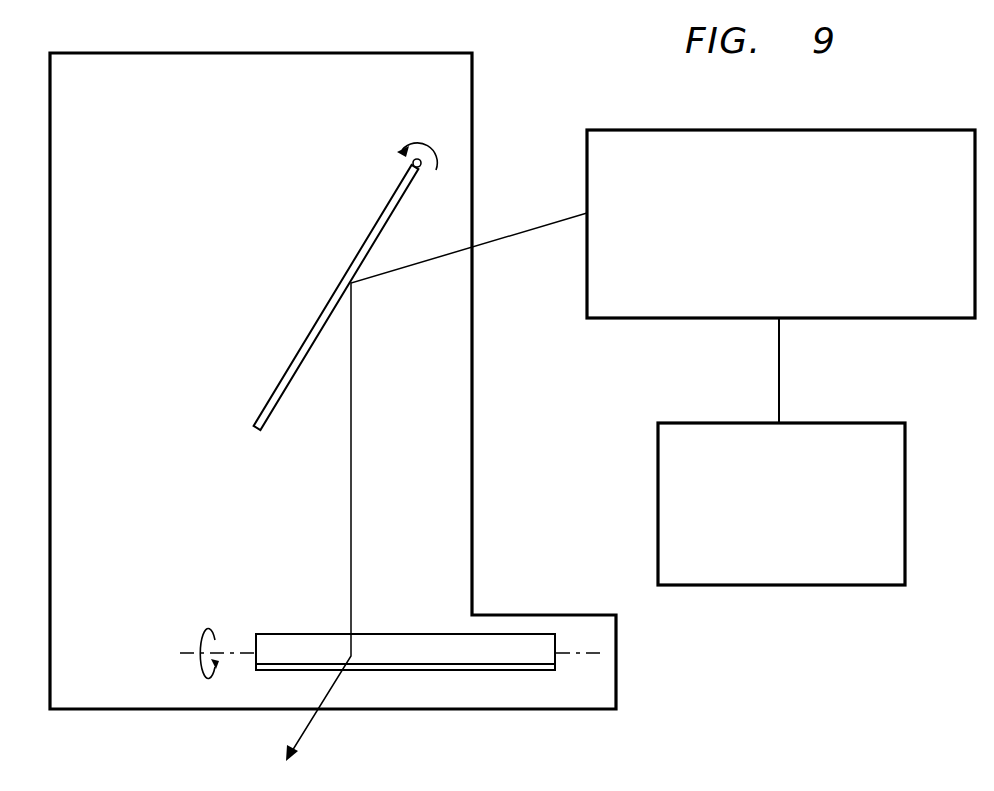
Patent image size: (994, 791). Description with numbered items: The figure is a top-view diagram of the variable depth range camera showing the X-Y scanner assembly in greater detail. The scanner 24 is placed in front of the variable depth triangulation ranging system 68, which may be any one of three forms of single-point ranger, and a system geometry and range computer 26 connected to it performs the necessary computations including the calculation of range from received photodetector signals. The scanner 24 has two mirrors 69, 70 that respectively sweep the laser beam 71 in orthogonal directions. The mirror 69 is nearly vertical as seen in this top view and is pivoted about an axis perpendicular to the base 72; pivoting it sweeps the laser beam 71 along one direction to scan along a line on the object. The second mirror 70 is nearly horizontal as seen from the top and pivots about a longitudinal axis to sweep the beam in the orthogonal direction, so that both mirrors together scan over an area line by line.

The scanner 24 is at (333, 407).
The base 72 is at (473, 95).
The mirror 69 is at (347, 272).
The second mirror 70 is at (392, 640).
The laser beam 71 is at (410, 268).
The variable depth triangulation ranging system 68 is at (937, 130).
The system geometry and range computer 26 is at (721, 585).